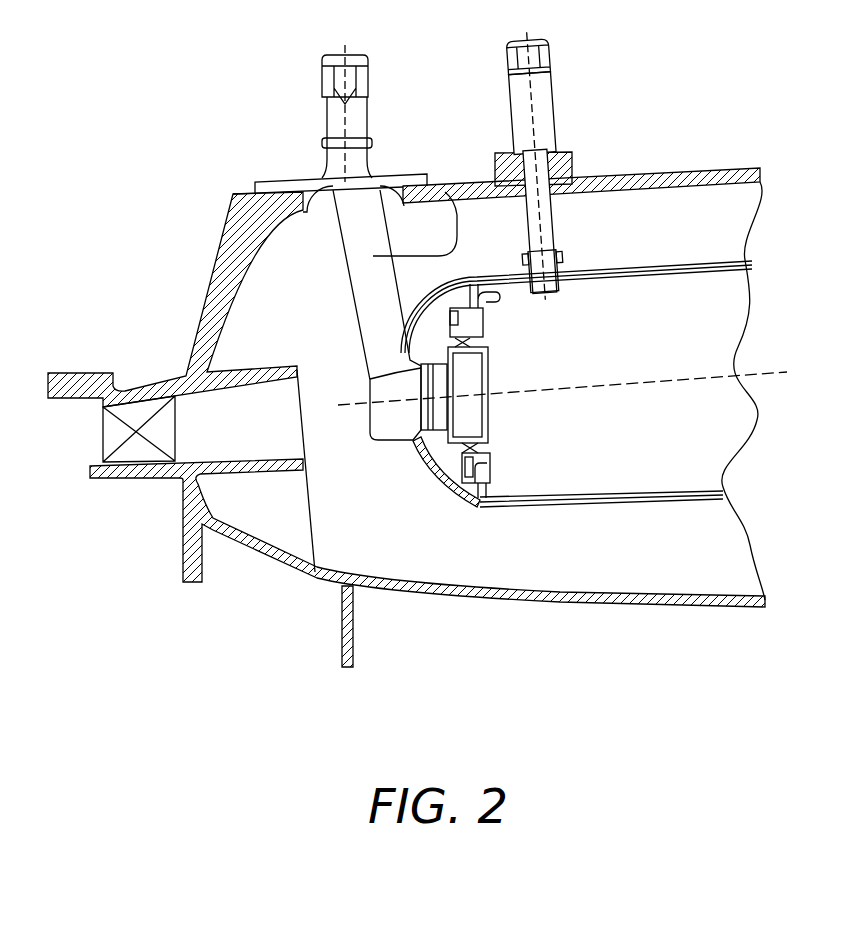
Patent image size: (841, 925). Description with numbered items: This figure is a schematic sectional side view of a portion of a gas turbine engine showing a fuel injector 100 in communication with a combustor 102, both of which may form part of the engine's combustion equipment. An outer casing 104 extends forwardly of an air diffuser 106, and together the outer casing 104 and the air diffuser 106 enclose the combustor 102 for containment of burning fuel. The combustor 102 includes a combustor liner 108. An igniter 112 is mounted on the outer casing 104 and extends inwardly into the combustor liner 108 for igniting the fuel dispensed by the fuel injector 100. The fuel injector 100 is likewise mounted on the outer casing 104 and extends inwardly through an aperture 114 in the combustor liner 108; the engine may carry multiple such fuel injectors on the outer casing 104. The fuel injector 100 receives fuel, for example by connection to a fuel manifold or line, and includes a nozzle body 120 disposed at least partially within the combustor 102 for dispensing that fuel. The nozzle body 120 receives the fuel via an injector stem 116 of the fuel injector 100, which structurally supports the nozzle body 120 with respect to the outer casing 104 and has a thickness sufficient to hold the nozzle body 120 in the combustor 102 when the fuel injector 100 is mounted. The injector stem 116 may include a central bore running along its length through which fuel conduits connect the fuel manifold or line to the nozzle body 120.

The fuel injector 100 is at (340, 329).
The combustor 102 is at (701, 248).
The outer casing 104 is at (702, 170).
The air diffuser 106 is at (207, 280).
The combustor liner 108 is at (620, 268).
The igniter 112 is at (543, 85).
The aperture 114 is at (408, 443).
The injector stem 116 is at (452, 212).
The nozzle body 120 is at (380, 440).